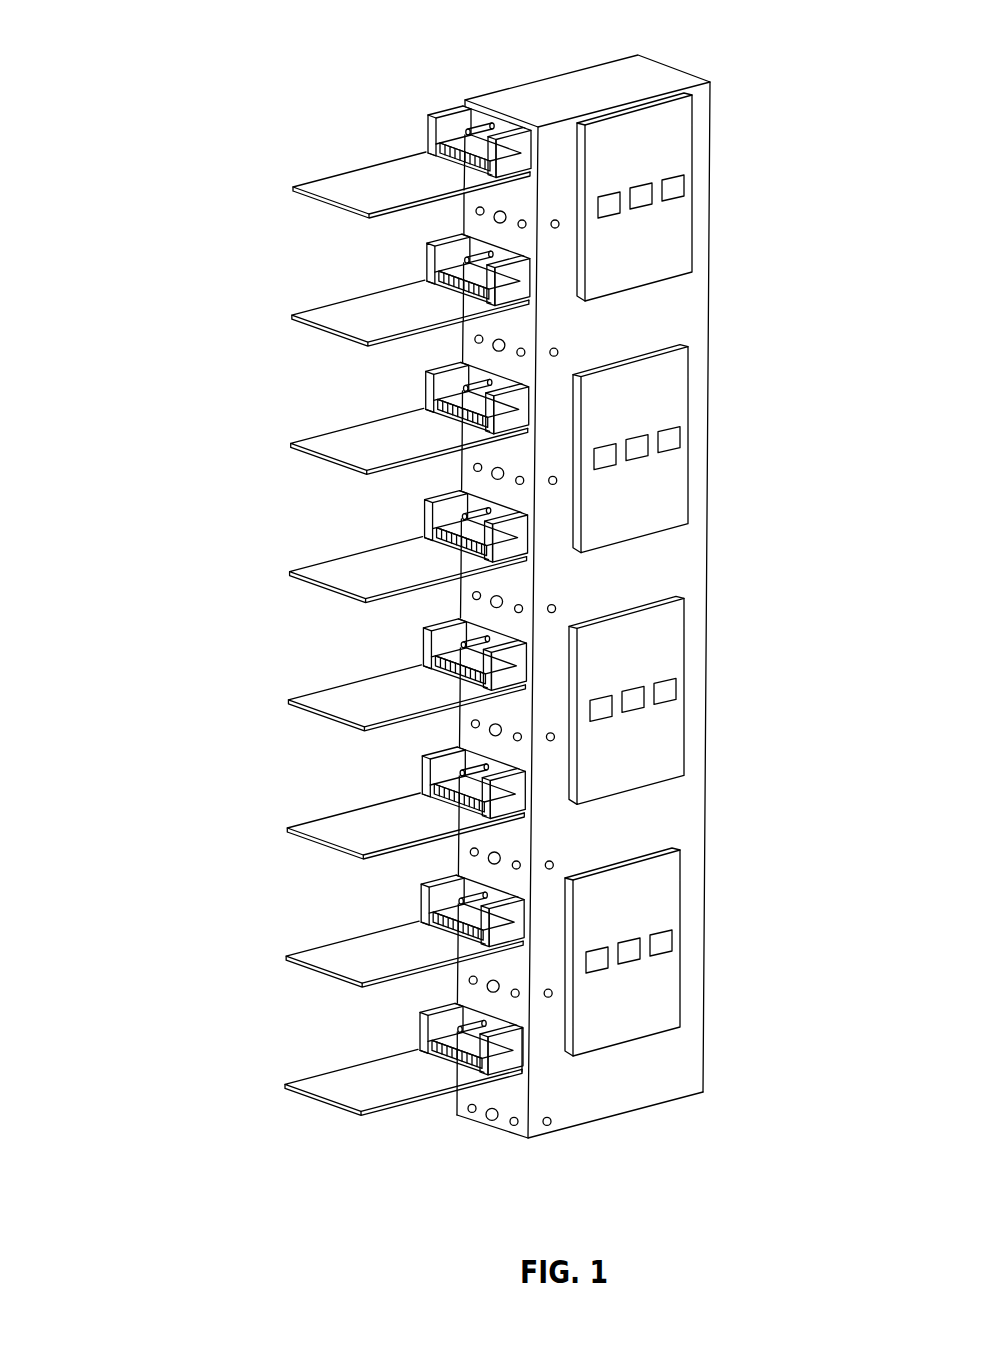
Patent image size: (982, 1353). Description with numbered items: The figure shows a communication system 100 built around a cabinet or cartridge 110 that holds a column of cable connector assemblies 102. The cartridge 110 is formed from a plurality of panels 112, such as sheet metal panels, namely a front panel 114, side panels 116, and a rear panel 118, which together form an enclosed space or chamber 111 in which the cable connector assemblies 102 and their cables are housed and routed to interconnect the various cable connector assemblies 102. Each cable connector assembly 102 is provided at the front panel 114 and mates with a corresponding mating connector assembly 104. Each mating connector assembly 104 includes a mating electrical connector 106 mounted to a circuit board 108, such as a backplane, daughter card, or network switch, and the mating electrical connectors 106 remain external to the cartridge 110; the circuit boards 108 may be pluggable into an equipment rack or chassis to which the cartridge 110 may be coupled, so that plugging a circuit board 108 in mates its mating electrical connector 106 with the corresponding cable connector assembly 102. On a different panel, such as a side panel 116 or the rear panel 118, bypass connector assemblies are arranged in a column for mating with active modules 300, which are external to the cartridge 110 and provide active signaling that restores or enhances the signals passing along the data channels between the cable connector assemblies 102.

The communication system 100 is at (168, 108).
The cable connector assembly 102 is at (539, 1058).
The mating connector assembly 104 is at (403, 1050).
The mating electrical connector 106 is at (425, 1055).
The circuit board 108 is at (323, 1087).
The cartridge 110 is at (665, 555).
The chamber 111 is at (714, 291).
The panels 112 is at (642, 1077).
The front panel 114 is at (476, 212).
The side panel 116 is at (527, 78).
The rear panel 118 is at (673, 65).
The active module 300 is at (679, 245).